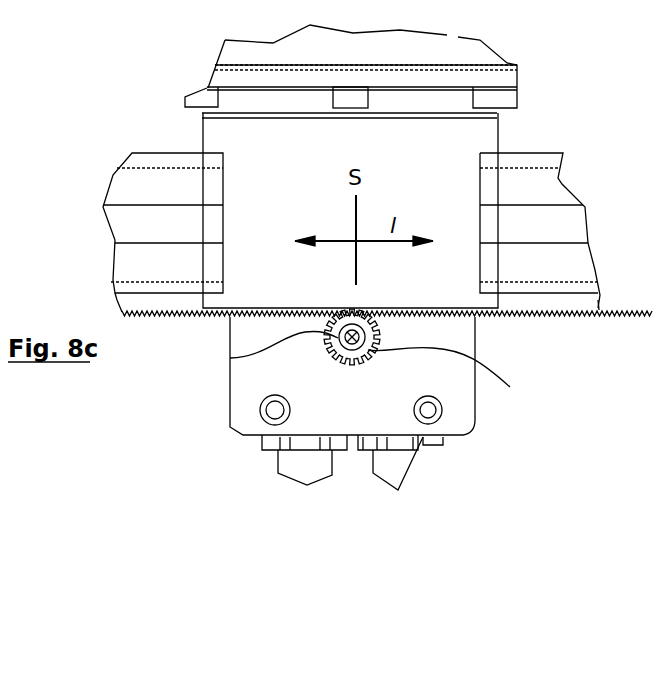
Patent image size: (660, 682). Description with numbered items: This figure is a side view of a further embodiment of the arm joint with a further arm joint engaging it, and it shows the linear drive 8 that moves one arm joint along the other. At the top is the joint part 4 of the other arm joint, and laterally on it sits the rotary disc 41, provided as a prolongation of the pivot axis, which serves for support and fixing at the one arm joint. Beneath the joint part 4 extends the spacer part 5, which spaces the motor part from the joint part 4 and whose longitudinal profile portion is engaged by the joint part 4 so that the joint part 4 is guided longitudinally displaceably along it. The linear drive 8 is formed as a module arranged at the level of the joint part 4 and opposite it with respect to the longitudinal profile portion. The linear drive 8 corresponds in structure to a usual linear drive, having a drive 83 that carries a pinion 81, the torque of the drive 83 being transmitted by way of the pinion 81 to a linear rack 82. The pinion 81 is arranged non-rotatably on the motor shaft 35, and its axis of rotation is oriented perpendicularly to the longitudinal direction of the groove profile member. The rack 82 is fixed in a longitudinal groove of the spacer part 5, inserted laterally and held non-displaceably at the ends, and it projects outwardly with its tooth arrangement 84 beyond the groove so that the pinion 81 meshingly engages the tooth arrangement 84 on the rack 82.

The joint part 4 is at (500, 53).
The rotary disc 41 is at (500, 133).
The spacer part 5 is at (147, 151).
The linear drive 8 is at (203, 421).
The pinion 81 is at (387, 369).
The rack 82 is at (598, 310).
The drive 83 is at (238, 437).
The tooth arrangement 84 is at (552, 317).
The motor shaft 35 is at (230, 358).